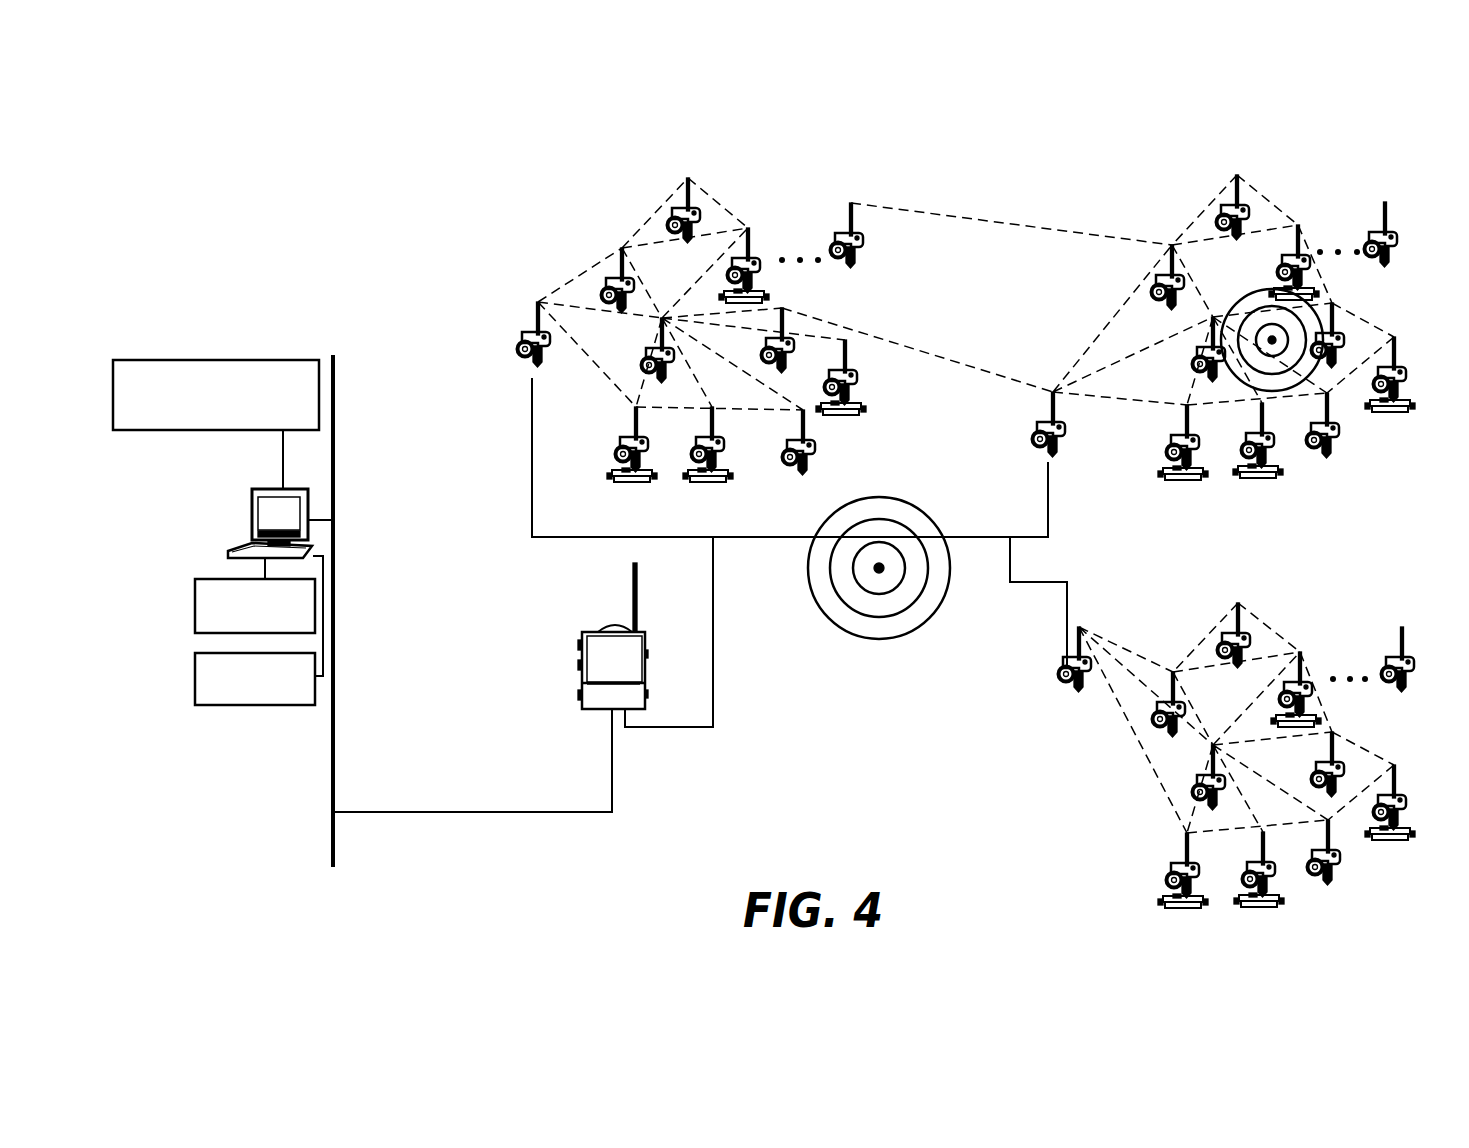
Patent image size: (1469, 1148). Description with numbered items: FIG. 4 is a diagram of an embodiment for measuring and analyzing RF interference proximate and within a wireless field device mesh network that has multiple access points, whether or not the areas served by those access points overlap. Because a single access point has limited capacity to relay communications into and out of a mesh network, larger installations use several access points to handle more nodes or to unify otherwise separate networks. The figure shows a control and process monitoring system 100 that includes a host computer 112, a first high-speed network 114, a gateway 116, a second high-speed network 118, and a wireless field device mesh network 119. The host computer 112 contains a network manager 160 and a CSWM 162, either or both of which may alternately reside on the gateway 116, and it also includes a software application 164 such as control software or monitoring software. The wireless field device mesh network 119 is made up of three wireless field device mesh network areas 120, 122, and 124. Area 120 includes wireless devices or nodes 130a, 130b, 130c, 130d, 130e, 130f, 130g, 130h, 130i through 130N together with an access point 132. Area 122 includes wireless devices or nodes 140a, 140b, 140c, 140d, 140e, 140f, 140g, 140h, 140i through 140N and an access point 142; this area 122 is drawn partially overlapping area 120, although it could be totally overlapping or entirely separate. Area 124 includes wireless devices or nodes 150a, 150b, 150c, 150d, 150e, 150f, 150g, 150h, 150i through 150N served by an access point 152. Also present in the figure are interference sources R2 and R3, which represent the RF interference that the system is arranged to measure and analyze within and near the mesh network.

The control and process monitoring system 100 is at (347, 234).
The host computer 112 is at (268, 509).
The first high-speed network 114 is at (377, 611).
The gateway 116 is at (587, 636).
The second high-speed network 118 is at (763, 521).
The wireless field device mesh network 119 is at (1074, 157).
The wireless field device mesh network area 120 is at (765, 195).
The wireless field device mesh network area 122 is at (1292, 187).
The wireless field device mesh network area 124 is at (1329, 645).
The wireless device or node 130a is at (653, 280).
The wireless device or node 130b is at (629, 350).
The wireless device or node 130c is at (643, 465).
The wireless device or node 130d is at (648, 210).
The wireless device or node 130e is at (727, 461).
The wireless device or node 130f is at (779, 265).
The wireless device or node 130g is at (745, 340).
The wireless device or node 130h is at (831, 447).
The wireless device or node 130i is at (862, 387).
The wireless device or node 130N is at (876, 248).
The access point 132 is at (500, 329).
The wireless device or node 140a is at (1203, 277).
The wireless device or node 140b is at (1171, 349).
The wireless device or node 140c is at (1160, 456).
The wireless device or node 140d is at (1202, 207).
The wireless device or node 140e is at (1281, 459).
The wireless device or node 140f is at (1329, 263).
The wireless device or node 140g is at (1385, 335).
The wireless device or node 140h is at (1343, 440).
The wireless device or node 140i is at (1390, 399).
The wireless device or node 140N is at (1346, 231).
The access point 142 is at (1006, 424).
The wireless device or node 150a is at (1199, 704).
The wireless device or node 150b is at (1224, 793).
The wireless device or node 150c is at (1191, 893).
The wireless device or node 150d is at (1211, 635).
The wireless device or node 150e is at (1274, 887).
The wireless device or node 150f is at (1327, 689).
The wireless device or node 150g is at (1294, 764).
The wireless device or node 150h is at (1352, 864).
The wireless device or node 150i is at (1402, 827).
The wireless device or node 150N is at (1414, 684).
The access point 152 is at (1031, 661).
The network manager 160 is at (230, 603).
The CSWM 162 is at (225, 679).
The software application 164 is at (216, 368).
The interference source R2 is at (1329, 339).
The interference source R3 is at (895, 560).